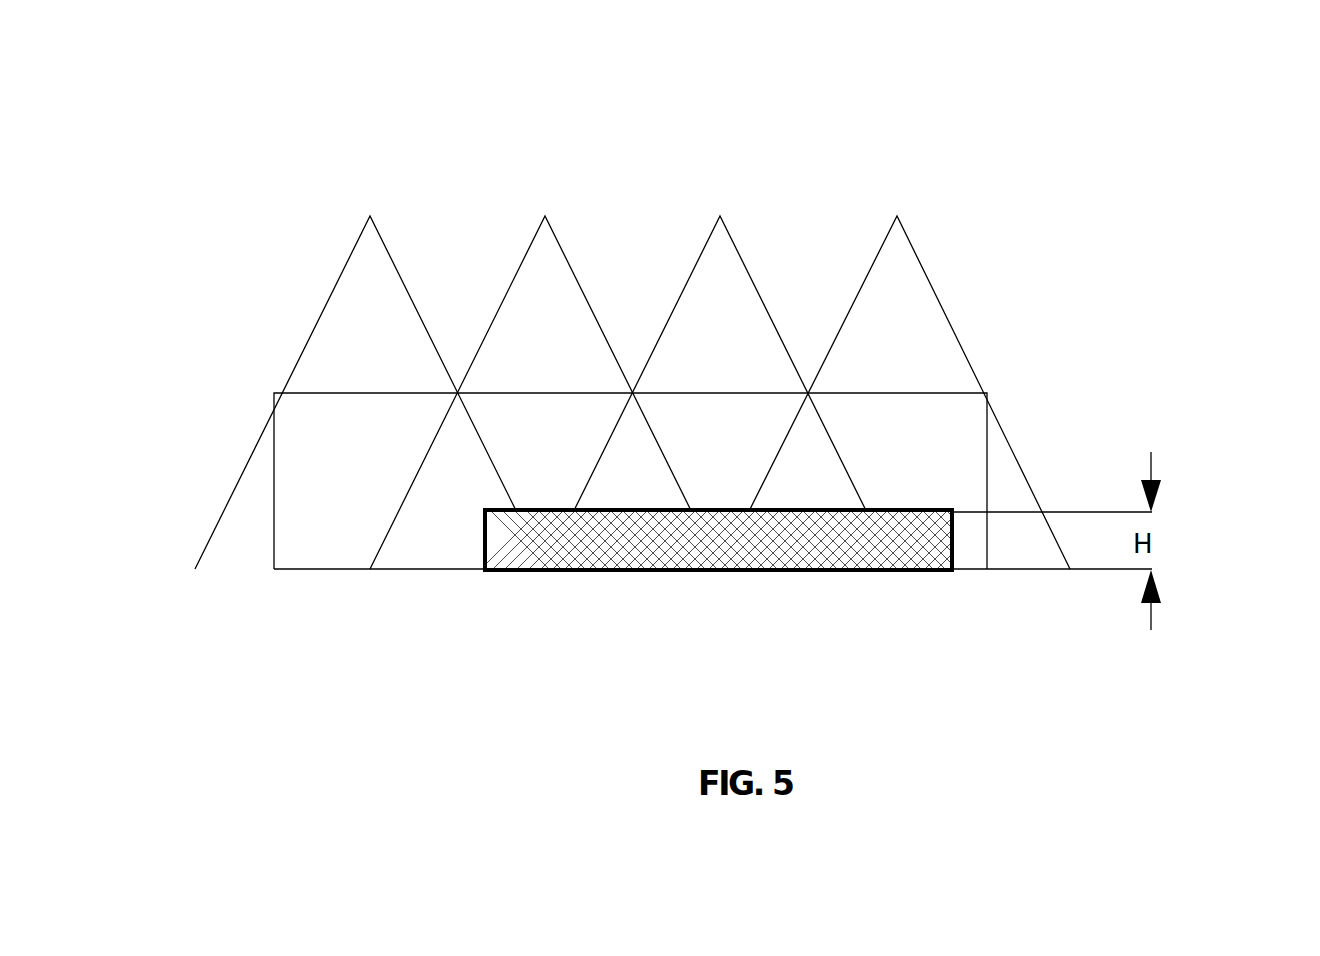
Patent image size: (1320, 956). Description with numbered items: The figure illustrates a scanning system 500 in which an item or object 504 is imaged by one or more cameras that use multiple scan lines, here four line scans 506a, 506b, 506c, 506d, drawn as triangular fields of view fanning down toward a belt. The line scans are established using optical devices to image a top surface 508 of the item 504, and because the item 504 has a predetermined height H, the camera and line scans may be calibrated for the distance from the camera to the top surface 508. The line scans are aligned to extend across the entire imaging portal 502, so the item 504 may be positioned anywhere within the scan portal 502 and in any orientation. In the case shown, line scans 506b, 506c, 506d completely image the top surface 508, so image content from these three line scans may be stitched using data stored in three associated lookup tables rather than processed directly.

The scanning system 500 is at (240, 104).
The imaging portal 502 is at (896, 360).
The item 504 is at (902, 535).
The scan line 506a is at (335, 275).
The scan line 506b is at (513, 275).
The scan line 506c is at (688, 275).
The scan line 506d is at (867, 275).
The top surface 508 is at (903, 482).